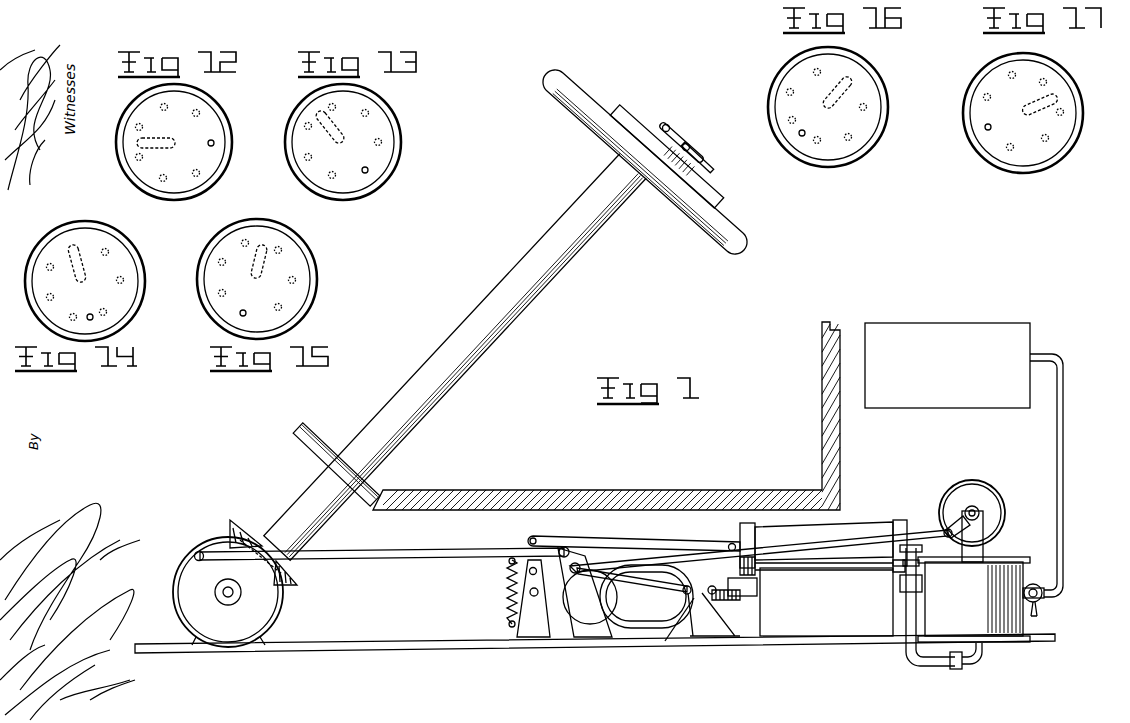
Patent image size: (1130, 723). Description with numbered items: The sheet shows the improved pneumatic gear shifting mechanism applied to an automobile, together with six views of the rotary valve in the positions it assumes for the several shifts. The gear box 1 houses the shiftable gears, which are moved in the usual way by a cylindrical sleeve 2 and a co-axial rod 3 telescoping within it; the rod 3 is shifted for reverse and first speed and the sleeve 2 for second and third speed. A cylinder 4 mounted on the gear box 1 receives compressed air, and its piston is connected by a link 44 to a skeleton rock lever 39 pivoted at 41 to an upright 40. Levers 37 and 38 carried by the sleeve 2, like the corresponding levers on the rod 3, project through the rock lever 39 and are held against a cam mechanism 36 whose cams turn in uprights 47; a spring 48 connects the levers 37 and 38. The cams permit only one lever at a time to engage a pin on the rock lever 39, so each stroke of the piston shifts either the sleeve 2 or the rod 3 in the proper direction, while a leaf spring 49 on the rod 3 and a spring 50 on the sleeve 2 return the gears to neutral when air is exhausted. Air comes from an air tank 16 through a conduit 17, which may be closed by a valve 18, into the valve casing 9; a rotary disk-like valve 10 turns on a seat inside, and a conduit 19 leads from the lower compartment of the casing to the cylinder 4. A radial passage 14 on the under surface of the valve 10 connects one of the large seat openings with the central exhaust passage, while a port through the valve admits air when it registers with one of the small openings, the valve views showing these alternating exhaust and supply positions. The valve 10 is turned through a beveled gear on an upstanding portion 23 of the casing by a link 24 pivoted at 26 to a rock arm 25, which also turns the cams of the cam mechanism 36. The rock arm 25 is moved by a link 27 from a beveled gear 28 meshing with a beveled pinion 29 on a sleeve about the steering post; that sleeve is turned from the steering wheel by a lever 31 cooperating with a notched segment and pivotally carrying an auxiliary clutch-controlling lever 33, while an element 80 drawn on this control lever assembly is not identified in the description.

In FIG. 12, the gear box 1 is at (214, 146).
In FIG. 13, the gear box 1 is at (368, 172).
In FIG. 15, the gear box 1 is at (240, 315).
In FIG. 17, the gear box 1 is at (985, 128).
In FIG. 1, the gear box 1 is at (826, 602).
In FIG. 14, the cylindrical sleeve 2 is at (80, 243).
In FIG. 1, the cylindrical sleeve 2 is at (757, 586).
In FIG. 16, the co-axial rod 3 is at (860, 68).
In FIG. 1, the co-axial rod 3 is at (742, 597).
In FIG. 1, the cylinder 4 is at (866, 528).
In FIG. 12, the valve casing 9 is at (232, 141).
In FIG. 13, the valve casing 9 is at (390, 113).
In FIG. 14, the valve casing 9 is at (112, 236).
In FIG. 15, the valve casing 9 is at (215, 242).
In FIG. 16, the valve casing 9 is at (870, 70).
In FIG. 17, the valve casing 9 is at (980, 74).
In FIG. 1, the valve casing 9 is at (974, 599).
In FIG. 12, the rotary disk-like valve 10 is at (205, 126).
In FIG. 13, the rotary disk-like valve 10 is at (378, 127).
In FIG. 14, the rotary disk-like valve 10 is at (125, 262).
In FIG. 15, the rotary disk-like valve 10 is at (220, 303).
In FIG. 16, the rotary disk-like valve 10 is at (865, 120).
In FIG. 17, the rotary disk-like valve 10 is at (985, 147).
In FIG. 12, the radial passage 14 is at (125, 150).
In FIG. 13, the radial passage 14 is at (350, 117).
In FIG. 14, the radial passage 14 is at (58, 240).
In FIG. 15, the radial passage 14 is at (270, 261).
In FIG. 16, the radial passage 14 is at (865, 88).
In FIG. 17, the radial passage 14 is at (1085, 127).
In FIG. 1, the air tank 16 is at (947, 365).
In FIG. 1, the conduit 17 is at (1057, 452).
In FIG. 1, the valve 18 is at (1043, 599).
In FIG. 1, the conduit 19 is at (920, 660).
In FIG. 1, the upstanding portion 23 is at (986, 554).
In FIG. 1, the link 24 is at (706, 560).
In FIG. 1, the rock arm 25 is at (568, 548).
In FIG. 1, the pivotal connection 26 is at (608, 584).
In FIG. 1, the link 27 is at (410, 560).
In FIG. 1, the beveled gear 28 is at (190, 588).
In FIG. 1, the beveled pinion 29 is at (296, 586).
In FIG. 1, the lever 31 is at (727, 184).
In FIG. 1, the auxiliary clutch-controlling lever 33 is at (688, 133).
In FIG. 1, the cam mechanism 36 is at (613, 610).
In FIG. 1, the lever 37 is at (691, 587).
In FIG. 1, the lever 38 is at (676, 619).
In FIG. 1, the skeleton rock lever 39 is at (509, 563).
In FIG. 1, the upright 40 is at (510, 624).
In FIG. 1, the pivot point 41 is at (530, 593).
In FIG. 1, the link 44 is at (650, 536).
In FIG. 1, the uprights 47 is at (585, 625).
In FIG. 1, the spring 48 is at (508, 591).
In FIG. 1, the leaf spring 49 is at (690, 614).
In FIG. 1, the spring 50 is at (708, 617).
In FIG. 1, the clamp screw 80 is at (716, 161).